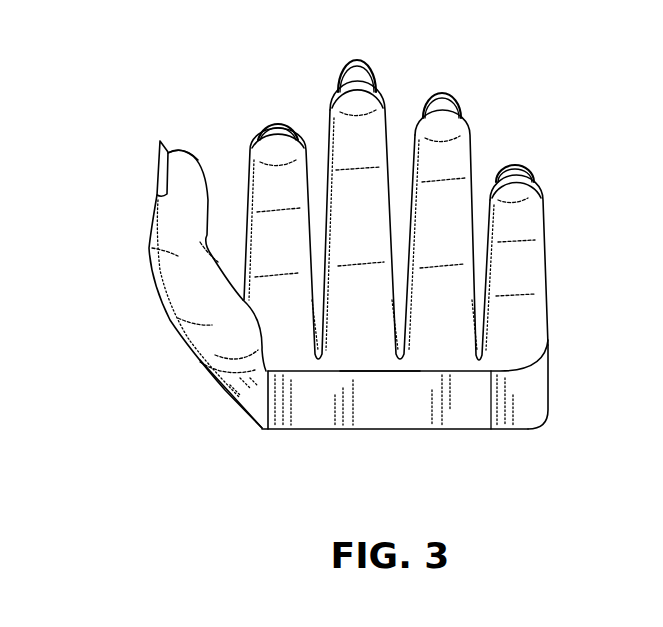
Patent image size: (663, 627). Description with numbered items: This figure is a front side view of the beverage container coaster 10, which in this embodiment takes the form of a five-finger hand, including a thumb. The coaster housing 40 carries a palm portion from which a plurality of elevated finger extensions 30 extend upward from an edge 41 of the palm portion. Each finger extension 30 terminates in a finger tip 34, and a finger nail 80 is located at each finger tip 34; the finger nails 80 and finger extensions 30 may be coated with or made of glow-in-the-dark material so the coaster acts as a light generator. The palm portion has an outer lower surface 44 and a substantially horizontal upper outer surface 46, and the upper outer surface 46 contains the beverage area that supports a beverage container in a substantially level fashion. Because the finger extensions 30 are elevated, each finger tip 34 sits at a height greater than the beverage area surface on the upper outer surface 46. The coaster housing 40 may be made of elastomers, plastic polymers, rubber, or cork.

The beverage container coaster 10 is at (90, 88).
The finger extension 30 is at (150, 262).
The finger tip 34 is at (190, 150).
The finger nail 80 is at (157, 146).
The coaster housing 40 is at (235, 394).
The edge of palm portion 41 is at (536, 382).
The outer lower surface 44 is at (455, 432).
The upper outer surface 46 is at (369, 368).